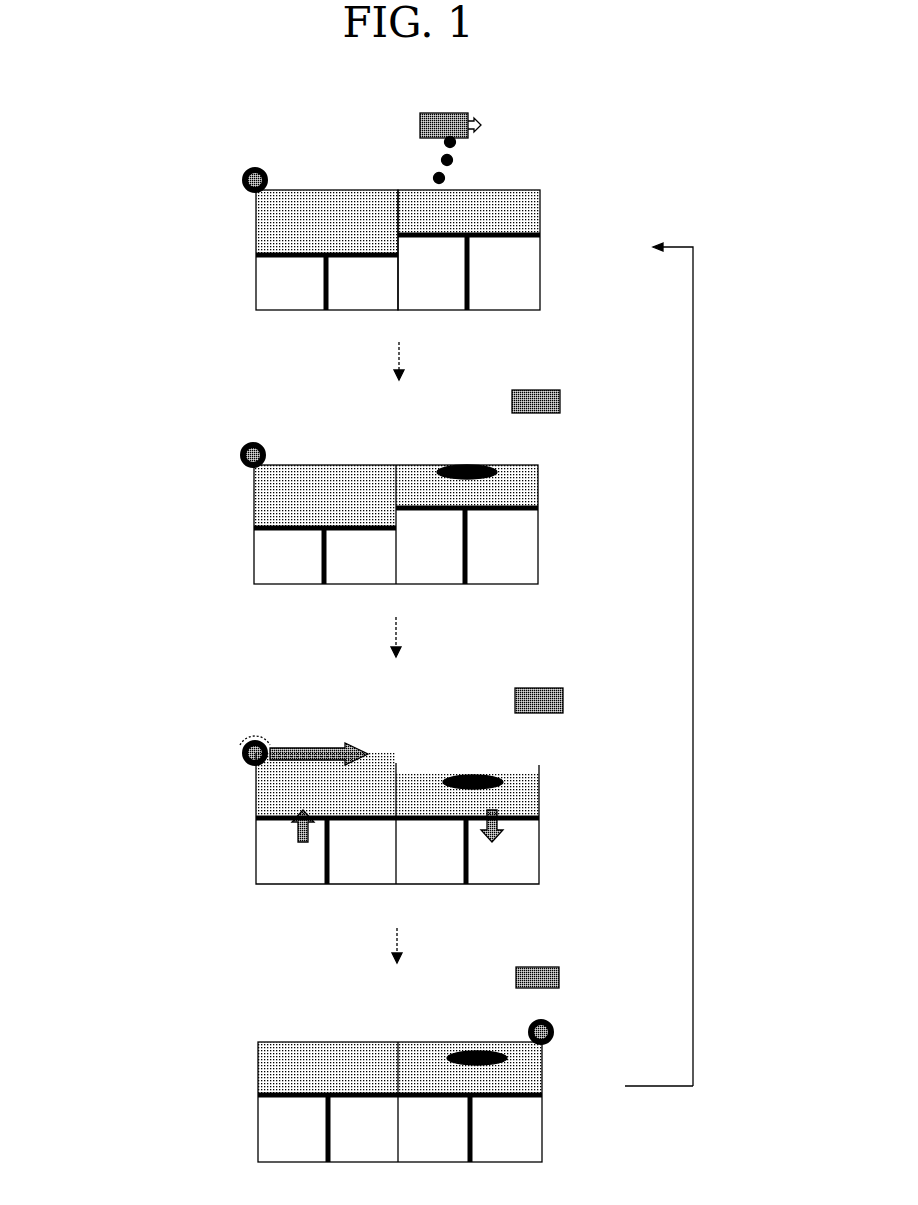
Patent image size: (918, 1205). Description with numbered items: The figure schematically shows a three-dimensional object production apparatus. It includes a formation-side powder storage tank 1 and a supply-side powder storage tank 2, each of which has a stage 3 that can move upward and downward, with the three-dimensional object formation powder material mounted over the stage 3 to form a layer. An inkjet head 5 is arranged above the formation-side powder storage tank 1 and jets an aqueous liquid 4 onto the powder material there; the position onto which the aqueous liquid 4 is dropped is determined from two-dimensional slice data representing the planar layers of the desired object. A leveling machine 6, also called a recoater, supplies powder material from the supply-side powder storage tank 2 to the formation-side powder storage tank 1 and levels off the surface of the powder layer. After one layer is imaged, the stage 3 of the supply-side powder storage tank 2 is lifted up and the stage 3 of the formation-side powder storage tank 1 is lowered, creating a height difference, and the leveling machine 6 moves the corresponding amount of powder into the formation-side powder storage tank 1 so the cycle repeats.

The formation-side powder storage tank 1 is at (520, 208).
The supply-side powder storage tank 2 is at (270, 233).
The stage 3 is at (320, 257).
The aqueous liquid 4 is at (455, 162).
The inkjet head 5 is at (420, 118).
The leveling machine 6 is at (243, 178).